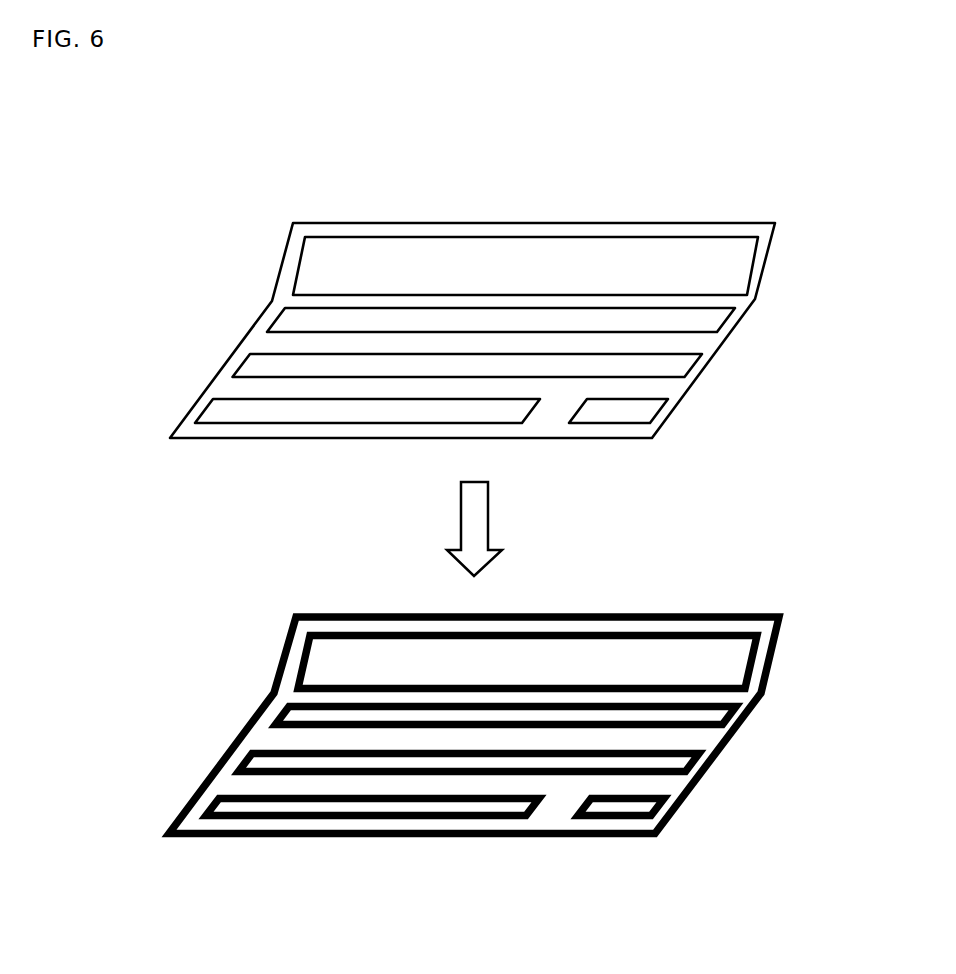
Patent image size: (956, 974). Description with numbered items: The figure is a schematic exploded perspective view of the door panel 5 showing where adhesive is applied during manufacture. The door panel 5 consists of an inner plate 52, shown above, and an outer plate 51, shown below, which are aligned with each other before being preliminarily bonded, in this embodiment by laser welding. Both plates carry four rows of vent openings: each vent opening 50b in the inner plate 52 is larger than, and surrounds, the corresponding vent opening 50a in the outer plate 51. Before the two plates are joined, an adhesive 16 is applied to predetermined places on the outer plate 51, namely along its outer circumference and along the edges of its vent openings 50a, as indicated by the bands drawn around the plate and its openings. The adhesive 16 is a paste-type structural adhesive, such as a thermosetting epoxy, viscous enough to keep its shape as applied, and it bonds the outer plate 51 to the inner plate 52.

The door panel 5 is at (185, 194).
The adhesive 16 is at (662, 613).
The vent opening 50a is at (258, 803).
The vent opening 50b is at (353, 270).
The outer plate 51 is at (707, 737).
The inner plate 52 is at (713, 342).